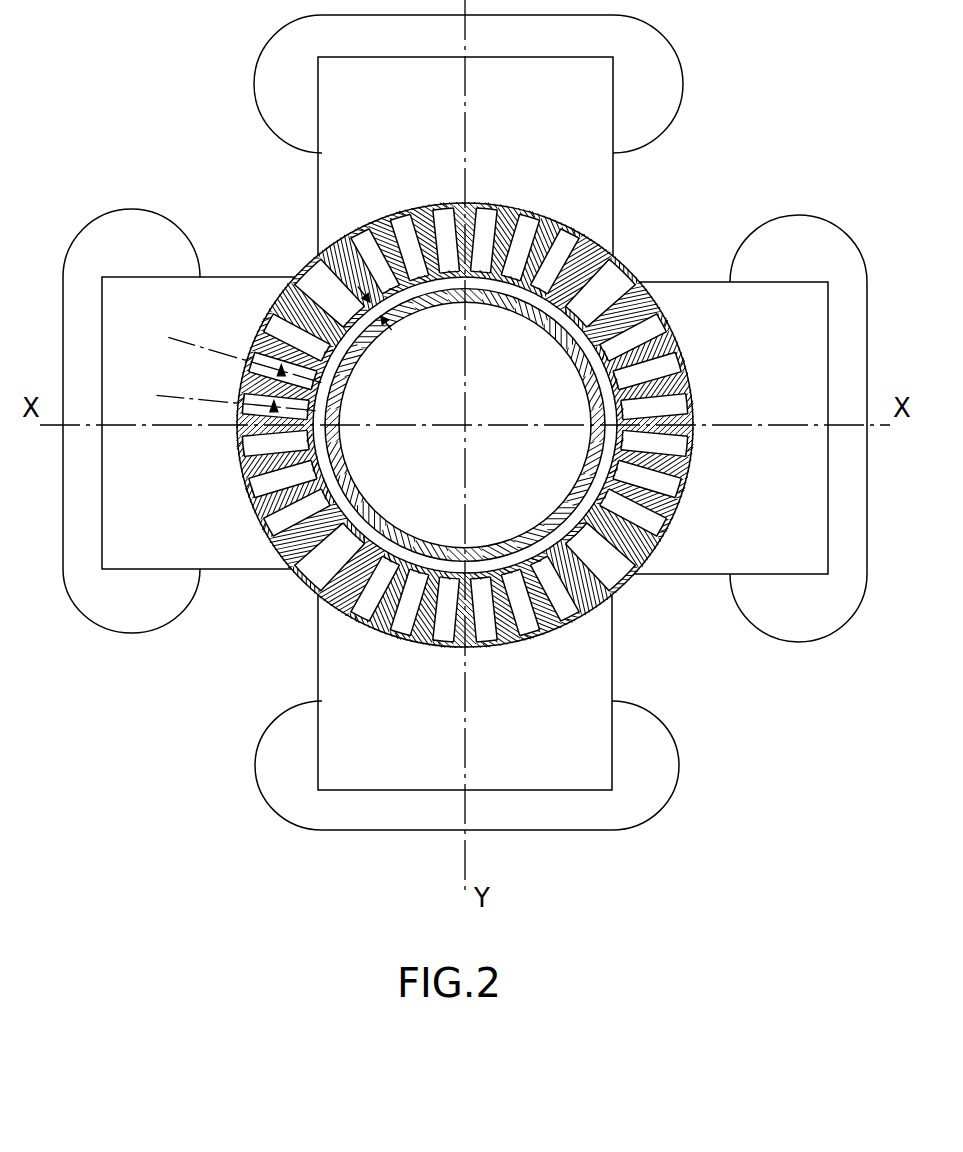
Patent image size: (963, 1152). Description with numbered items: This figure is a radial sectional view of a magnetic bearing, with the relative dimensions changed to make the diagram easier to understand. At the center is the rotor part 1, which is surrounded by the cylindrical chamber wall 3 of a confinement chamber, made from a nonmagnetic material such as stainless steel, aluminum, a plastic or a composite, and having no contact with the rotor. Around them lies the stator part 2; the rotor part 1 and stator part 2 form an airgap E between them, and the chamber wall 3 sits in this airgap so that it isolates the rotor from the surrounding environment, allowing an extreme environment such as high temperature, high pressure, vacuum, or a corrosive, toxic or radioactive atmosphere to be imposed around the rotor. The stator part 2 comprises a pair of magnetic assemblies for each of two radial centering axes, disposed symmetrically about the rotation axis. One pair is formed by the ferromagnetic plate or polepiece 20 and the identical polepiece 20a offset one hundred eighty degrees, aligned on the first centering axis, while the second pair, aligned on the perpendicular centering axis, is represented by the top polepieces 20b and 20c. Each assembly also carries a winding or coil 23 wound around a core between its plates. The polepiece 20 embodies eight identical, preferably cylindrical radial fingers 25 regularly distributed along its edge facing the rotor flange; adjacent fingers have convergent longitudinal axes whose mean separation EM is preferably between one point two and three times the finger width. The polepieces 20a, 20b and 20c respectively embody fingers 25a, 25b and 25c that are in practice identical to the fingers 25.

The rotor part 1 is at (557, 342).
The stator part 2 is at (246, 108).
The chamber wall 3 is at (305, 583).
The first ferromagnetic plate 20 is at (235, 300).
The polepiece 20a is at (718, 315).
The top polepiece 20b is at (578, 672).
The top polepiece 20c is at (592, 176).
The winding or coil 23 is at (134, 229).
The radial fingers 25 is at (287, 548).
The fingers 25a is at (640, 300).
The fingers 25b is at (555, 608).
The fingers 25c is at (335, 258).
The airgap E is at (393, 333).
The mean separation EM is at (250, 355).